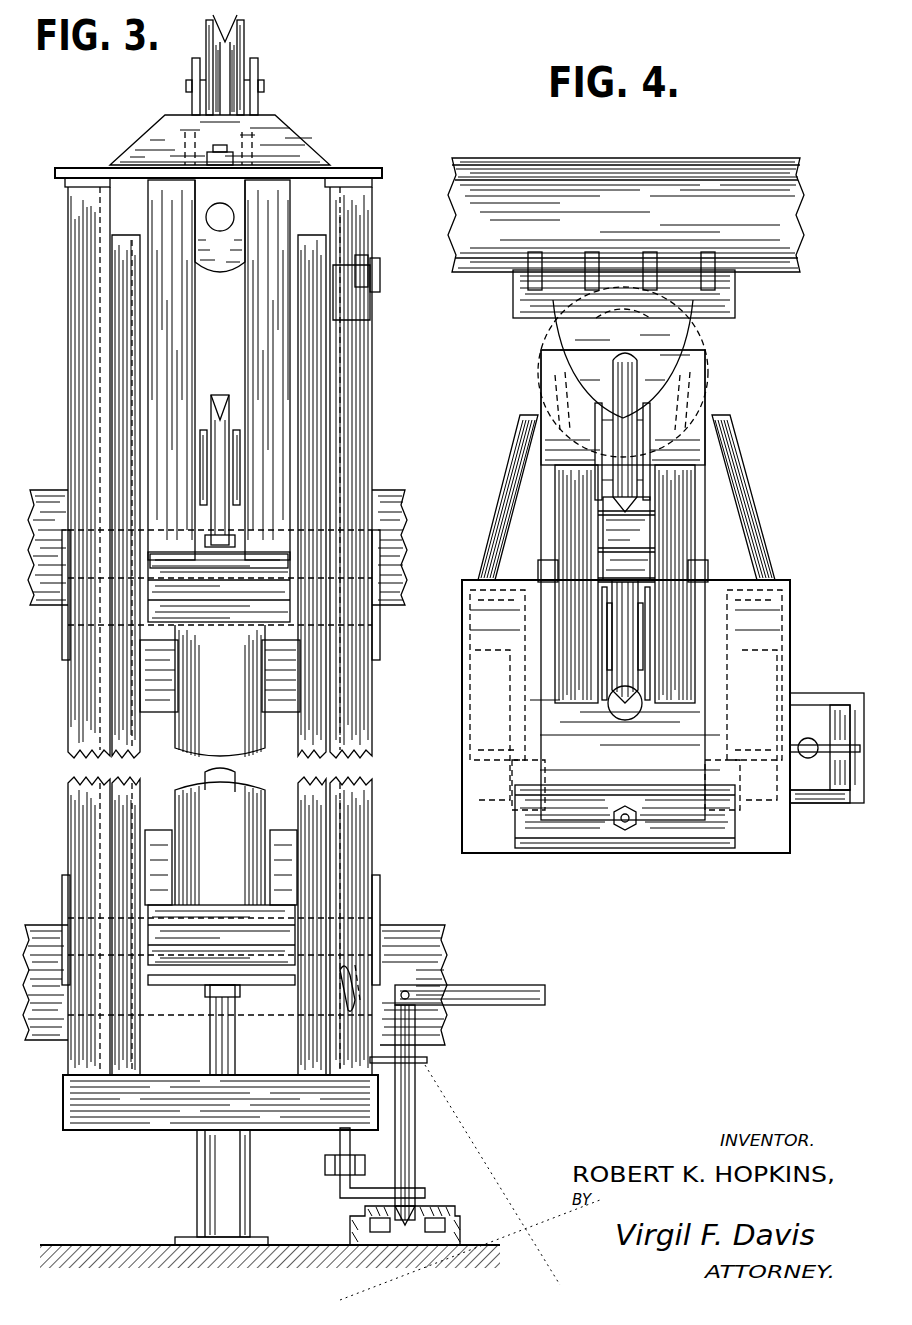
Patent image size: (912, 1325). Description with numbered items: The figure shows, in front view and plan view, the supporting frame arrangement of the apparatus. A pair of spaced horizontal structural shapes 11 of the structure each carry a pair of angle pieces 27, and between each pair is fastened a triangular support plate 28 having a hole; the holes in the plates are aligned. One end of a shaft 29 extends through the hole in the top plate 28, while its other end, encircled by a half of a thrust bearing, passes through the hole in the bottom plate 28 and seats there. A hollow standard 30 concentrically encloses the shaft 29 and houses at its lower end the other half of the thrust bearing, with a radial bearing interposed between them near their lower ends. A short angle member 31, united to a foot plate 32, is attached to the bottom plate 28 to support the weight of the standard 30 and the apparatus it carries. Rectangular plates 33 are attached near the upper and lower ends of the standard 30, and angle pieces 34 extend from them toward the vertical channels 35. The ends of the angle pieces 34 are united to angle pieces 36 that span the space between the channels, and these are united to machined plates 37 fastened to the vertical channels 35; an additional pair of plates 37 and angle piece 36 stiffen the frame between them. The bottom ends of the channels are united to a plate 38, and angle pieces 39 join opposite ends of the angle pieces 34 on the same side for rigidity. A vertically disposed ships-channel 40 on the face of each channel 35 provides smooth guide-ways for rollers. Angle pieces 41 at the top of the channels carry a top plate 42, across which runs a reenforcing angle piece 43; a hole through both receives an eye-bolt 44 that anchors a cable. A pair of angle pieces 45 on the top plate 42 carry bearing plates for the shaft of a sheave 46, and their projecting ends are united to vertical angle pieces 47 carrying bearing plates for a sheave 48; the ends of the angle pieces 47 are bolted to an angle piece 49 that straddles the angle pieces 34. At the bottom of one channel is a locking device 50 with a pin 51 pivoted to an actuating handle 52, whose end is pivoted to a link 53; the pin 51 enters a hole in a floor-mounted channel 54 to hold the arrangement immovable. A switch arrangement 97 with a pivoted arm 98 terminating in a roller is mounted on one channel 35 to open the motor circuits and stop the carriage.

In FIG. 3, the structural shapes 11 is at (48, 500).
In FIG. 4, the structural shapes 11 is at (540, 190).
In FIG. 4, the angle pieces 27 is at (720, 303).
In FIG. 3, the triangular support plate 28 is at (180, 988).
In FIG. 4, the triangular support plate 28 is at (690, 330).
In FIG. 3, the shaft 29 is at (235, 782).
In FIG. 4, the shaft 29 is at (612, 350).
In FIG. 3, the hollow standard 30 is at (220, 765).
In FIG. 3, the short angle member 31 is at (222, 1178).
In FIG. 3, the foot plate 32 is at (262, 1238).
In FIG. 4, the rectangular plates 33 is at (548, 390).
In FIG. 3, the angle pieces 34 is at (160, 682).
In FIG. 4, the angle pieces 34 is at (540, 570).
In FIG. 3, the vertical channels 35 is at (85, 392).
In FIG. 4, the vertical channels 35 is at (510, 745).
In FIG. 3, the angle pieces 36 is at (150, 607).
In FIG. 3, the plates 37 is at (62, 652).
In FIG. 3, the plate 38 is at (170, 1110).
In FIG. 3, the angle pieces 39 is at (72, 766).
In FIG. 4, the angle pieces 39 is at (515, 505).
In FIG. 3, the ships-channel 40 is at (128, 440).
In FIG. 4, the ships-channel 40 is at (512, 790).
In FIG. 3, the angle pieces 41 is at (68, 186).
In FIG. 3, the top plate 42 is at (340, 170).
In FIG. 4, the top plate 42 is at (775, 668).
In FIG. 3, the reenforcing angle piece 43 is at (140, 150).
In FIG. 4, the reenforcing angle piece 43 is at (655, 828).
In FIG. 3, the eye-bolt 44 is at (228, 235).
In FIG. 3, the angle pieces 45 is at (250, 150).
In FIG. 4, the angle pieces 45 is at (570, 490).
In FIG. 3, the sheave 46 is at (222, 46).
In FIG. 4, the sheave 46 is at (610, 708).
In FIG. 3, the angle pieces 47 is at (265, 322).
In FIG. 3, the sheave 48 is at (222, 398).
In FIG. 4, the sheave 48 is at (645, 395).
In FIG. 3, the angle piece 49 is at (278, 563).
In FIG. 4, the angle piece 49 is at (550, 532).
In FIG. 3, the locking device 50 is at (440, 1123).
In FIG. 4, the locking device 50 is at (821, 692).
In FIG. 3, the pin 51 is at (407, 1145).
In FIG. 4, the pin 51 is at (802, 760).
In FIG. 3, the actuating handle 52 is at (470, 990).
In FIG. 4, the actuating handle 52 is at (822, 755).
In FIG. 3, the link 53 is at (428, 1060).
In FIG. 3, the channel 54 is at (462, 1226).
In FIG. 4, the channel 54 is at (822, 805).
In FIG. 3, the switch arrangement 97 is at (352, 300).
In FIG. 3, the pivoted arm 98 is at (380, 280).